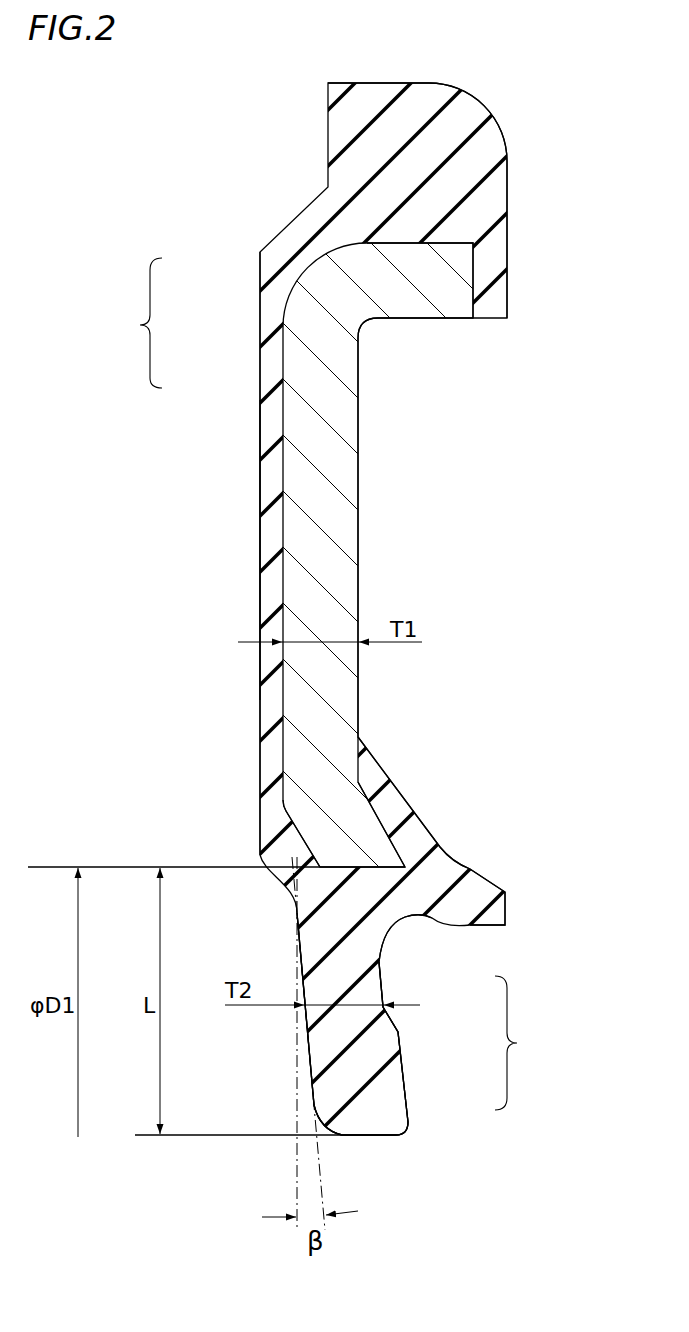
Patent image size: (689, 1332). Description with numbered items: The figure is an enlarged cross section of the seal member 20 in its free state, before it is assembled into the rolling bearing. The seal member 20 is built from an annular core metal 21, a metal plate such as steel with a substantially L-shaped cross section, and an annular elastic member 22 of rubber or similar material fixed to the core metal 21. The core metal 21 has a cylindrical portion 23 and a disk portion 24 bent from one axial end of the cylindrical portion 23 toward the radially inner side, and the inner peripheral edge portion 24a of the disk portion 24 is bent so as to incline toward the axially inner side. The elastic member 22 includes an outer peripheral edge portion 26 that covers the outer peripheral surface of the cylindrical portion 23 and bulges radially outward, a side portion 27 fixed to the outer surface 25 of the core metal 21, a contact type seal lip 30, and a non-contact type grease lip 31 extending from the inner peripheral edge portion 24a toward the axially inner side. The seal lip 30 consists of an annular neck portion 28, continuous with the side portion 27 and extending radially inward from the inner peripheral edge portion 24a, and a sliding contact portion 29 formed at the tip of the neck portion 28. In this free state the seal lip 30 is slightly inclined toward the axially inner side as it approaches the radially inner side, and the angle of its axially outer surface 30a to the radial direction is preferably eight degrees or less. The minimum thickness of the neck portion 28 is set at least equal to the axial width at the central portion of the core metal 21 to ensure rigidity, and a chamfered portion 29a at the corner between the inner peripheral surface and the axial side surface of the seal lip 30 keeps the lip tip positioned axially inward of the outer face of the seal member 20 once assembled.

The seal member 20 is at (135, 323).
The core metal 21 is at (281, 365).
The elastic member 22 is at (257, 278).
The cylindrical portion 23 is at (425, 283).
The disk portion 24 is at (337, 523).
The inner peripheral edge portion 24a is at (348, 850).
The outer surface 25 is at (275, 583).
The outer peripheral edge portion 26 is at (480, 150).
The side portion 27 is at (275, 487).
The neck portion 28 is at (367, 983).
The sliding contact portion 29 is at (385, 1098).
The chamfered portion 29a is at (318, 1128).
The seal lip 30 is at (424, 1024).
The axially outer surface 30a is at (310, 1055).
The grease lip 31 is at (470, 900).